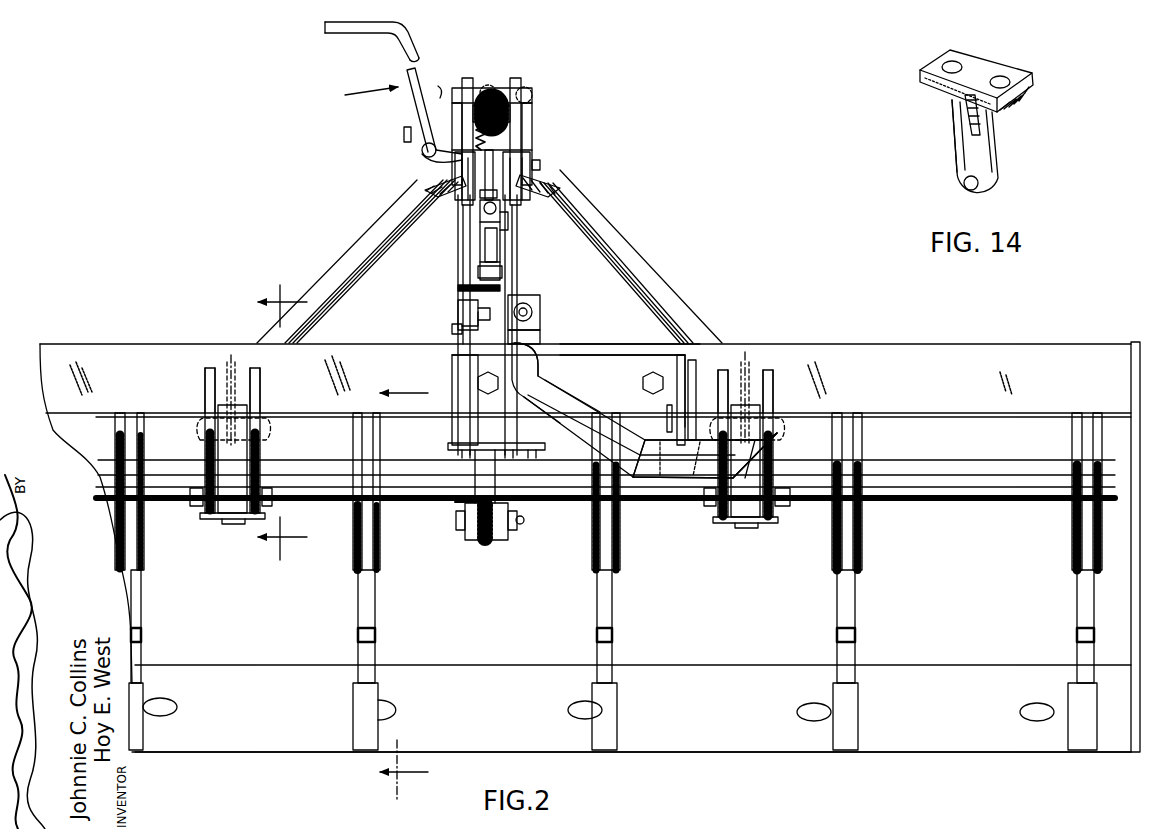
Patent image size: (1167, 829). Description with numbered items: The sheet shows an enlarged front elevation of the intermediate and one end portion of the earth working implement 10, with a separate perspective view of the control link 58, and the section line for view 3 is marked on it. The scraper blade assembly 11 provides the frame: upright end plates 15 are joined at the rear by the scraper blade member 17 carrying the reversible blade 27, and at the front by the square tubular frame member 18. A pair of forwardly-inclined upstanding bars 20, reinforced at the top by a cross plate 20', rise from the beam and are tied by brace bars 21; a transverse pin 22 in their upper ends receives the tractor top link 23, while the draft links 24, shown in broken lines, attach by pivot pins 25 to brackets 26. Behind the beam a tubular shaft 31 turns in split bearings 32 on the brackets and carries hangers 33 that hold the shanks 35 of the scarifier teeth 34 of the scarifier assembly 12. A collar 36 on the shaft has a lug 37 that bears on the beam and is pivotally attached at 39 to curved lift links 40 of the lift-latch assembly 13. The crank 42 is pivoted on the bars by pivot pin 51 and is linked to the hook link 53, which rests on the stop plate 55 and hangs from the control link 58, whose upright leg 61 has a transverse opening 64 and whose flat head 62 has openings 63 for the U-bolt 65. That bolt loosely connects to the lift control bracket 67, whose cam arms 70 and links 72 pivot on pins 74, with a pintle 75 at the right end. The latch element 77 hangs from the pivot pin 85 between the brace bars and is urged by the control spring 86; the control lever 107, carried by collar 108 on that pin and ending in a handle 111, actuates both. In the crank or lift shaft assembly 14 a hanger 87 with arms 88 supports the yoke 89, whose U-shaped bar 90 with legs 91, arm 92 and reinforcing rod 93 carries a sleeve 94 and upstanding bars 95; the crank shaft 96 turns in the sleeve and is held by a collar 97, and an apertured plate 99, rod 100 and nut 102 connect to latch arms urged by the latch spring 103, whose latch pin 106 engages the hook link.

In FIG. 2, the earth working implement 10 is at (225, 268).
In FIG. 2, the scraper blade assembly 11 is at (42, 350).
In FIG. 2, the scarifier assembly 12 is at (886, 601).
In FIG. 2, the scarifier lift-latch assembly 13 is at (322, 103).
In FIG. 2, the crank or lift shaft assembly 14 is at (680, 490).
In FIG. 2, the upright end plates 15 is at (1140, 568).
In FIG. 2, the scraper blade member 17 is at (976, 605).
In FIG. 2, the transverse tubular frame member 18 is at (1047, 334).
In FIG. 2, the upstanding bars 20 is at (470, 325).
In FIG. 2, the cross plate 20' is at (513, 141).
In FIG. 2, the brace bars 21 is at (368, 226).
In FIG. 2, the transverse pin 22 is at (533, 97).
In FIG. 2, the top link 23 is at (489, 86).
In FIG. 2, the draft links 24 is at (230, 360).
In FIG. 2, the pivot pins 25 is at (198, 430).
In FIG. 2, the brackets 26 is at (205, 386).
In FIG. 2, the reversible blade 27 is at (1006, 742).
In FIG. 2, the shaft 31 is at (975, 500).
In FIG. 2, the split bearings 32 is at (236, 519).
In FIG. 2, the hangers 33 is at (864, 527).
In FIG. 2, the scarifier teeth 34 is at (618, 708).
In FIG. 2, the shank 35 is at (356, 602).
In FIG. 2, the collar 36 is at (488, 541).
In FIG. 2, the lug 37 is at (454, 503).
In FIG. 2, the pivotal attachment 39 is at (518, 522).
In FIG. 2, the lift links 40 is at (464, 537).
In FIG. 2, the crank 42 is at (502, 240).
In FIG. 2, the pivot pin 51 is at (458, 316).
In FIG. 2, the hook link 53 is at (484, 236).
In FIG. 2, the stop plate 55 is at (460, 290).
In FIG. 2, the control link 58 is at (509, 218).
In FIG. 14, the control link 58 is at (1028, 158).
In FIG. 14, the leg 61 is at (956, 150).
In FIG. 14, the head 62 is at (1036, 82).
In FIG. 14, the openings 63 is at (950, 62).
In FIG. 14, the transverse opening 64 is at (964, 183).
In FIG. 2, the U-bolt 65 is at (482, 190).
In FIG. 2, the lift control bracket 67 is at (532, 160).
In FIG. 2, the cam arm 70 is at (497, 206).
In FIG. 2, the control bracket links 72 is at (440, 182).
In FIG. 2, the pins 74 is at (541, 165).
In FIG. 2, the pintle 75 is at (428, 160).
In FIG. 2, the latch element 77 is at (442, 104).
In FIG. 2, the pivot pin 85 is at (404, 140).
In FIG. 2, the control spring 86 is at (490, 136).
In FIG. 2, the hanger 87 is at (606, 360).
In FIG. 2, the hanger arms 88 is at (452, 392).
In FIG. 2, the yoke 89 is at (588, 399).
In FIG. 2, the U-shaped flat bar 90 is at (586, 443).
In FIG. 2, the yoke legs 91 is at (710, 467).
In FIG. 2, the yoke arm 92 is at (640, 445).
In FIG. 2, the rod 93 is at (564, 414).
In FIG. 2, the sleeve 94 is at (608, 414).
In FIG. 2, the upstanding yoke bars 95 is at (540, 370).
In FIG. 2, the crank shaft 96 is at (688, 410).
In FIG. 2, the collar 97 is at (446, 436).
In FIG. 2, the apertured plate 99 is at (528, 296).
In FIG. 2, the rod 100 is at (532, 308).
In FIG. 2, the nut 102 is at (532, 318).
In FIG. 2, the latch spring 103 is at (462, 330).
In FIG. 2, the latch pin 106 is at (478, 272).
In FIG. 2, the control lever 107 is at (414, 92).
In FIG. 2, the collar 108 is at (422, 150).
In FIG. 2, the handle 111 is at (340, 36).
In FIG. 2, the section line 3 is at (521, 78).